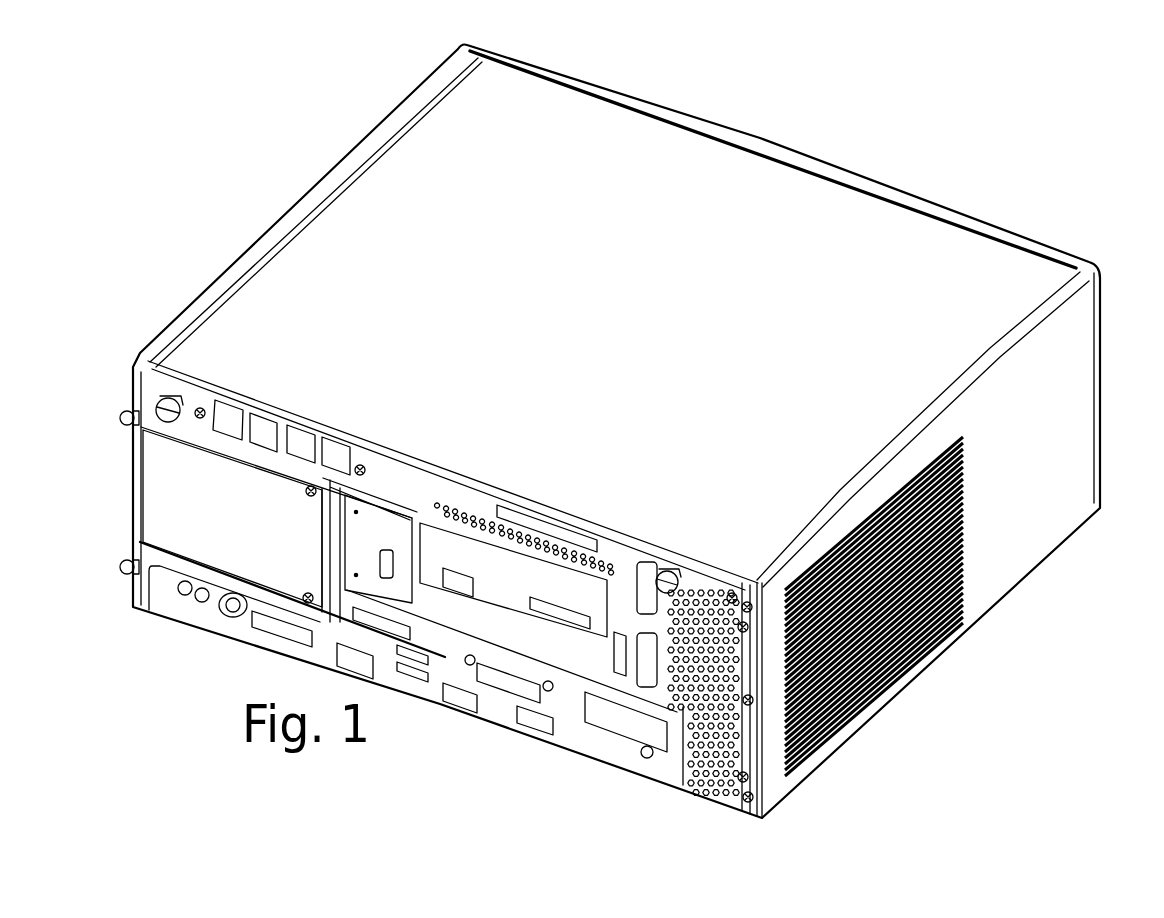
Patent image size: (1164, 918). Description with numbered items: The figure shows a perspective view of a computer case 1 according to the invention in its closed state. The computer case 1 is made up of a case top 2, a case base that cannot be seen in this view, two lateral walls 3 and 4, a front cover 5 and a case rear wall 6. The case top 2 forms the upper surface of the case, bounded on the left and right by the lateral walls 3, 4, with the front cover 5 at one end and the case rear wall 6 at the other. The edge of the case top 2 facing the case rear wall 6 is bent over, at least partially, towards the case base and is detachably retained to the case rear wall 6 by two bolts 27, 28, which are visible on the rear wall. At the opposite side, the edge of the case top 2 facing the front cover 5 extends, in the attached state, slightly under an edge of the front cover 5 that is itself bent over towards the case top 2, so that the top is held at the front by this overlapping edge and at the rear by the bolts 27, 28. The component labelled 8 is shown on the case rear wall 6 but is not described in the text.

The computer case 1 is at (656, 88).
The case top 2 is at (857, 233).
The lateral wall 3 is at (987, 575).
The lateral wall 4 is at (233, 266).
The front cover 5 is at (1047, 238).
The case rear wall 6 is at (697, 752).
The cover plate 8 is at (175, 507).
The bolt 27 is at (171, 397).
The bolt 28 is at (666, 570).